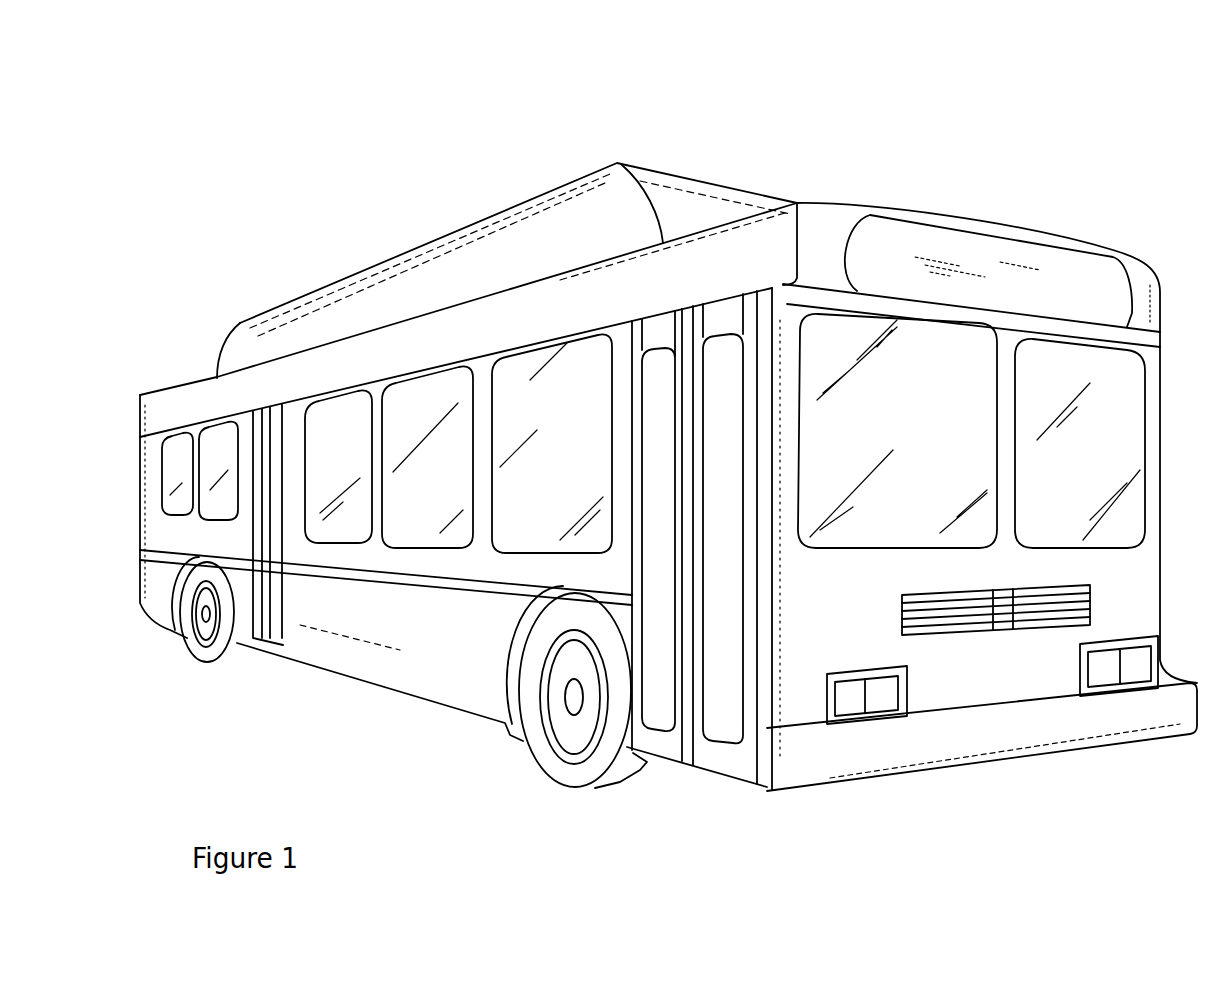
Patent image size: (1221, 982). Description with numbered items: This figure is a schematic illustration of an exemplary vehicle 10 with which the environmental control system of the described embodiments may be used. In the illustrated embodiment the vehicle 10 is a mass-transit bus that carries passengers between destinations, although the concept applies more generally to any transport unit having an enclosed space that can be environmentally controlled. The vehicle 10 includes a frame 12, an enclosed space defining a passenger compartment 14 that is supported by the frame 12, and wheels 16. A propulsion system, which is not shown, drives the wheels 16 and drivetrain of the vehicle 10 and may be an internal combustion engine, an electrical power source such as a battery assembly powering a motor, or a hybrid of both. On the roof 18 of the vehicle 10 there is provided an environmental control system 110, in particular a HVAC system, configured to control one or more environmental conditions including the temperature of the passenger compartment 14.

The vehicle 10 is at (983, 82).
The frame 12 is at (365, 642).
The passenger compartment 14 is at (330, 422).
The wheels 16 is at (195, 656).
The roof 18 is at (1052, 228).
The environmental control system 110 is at (497, 260).